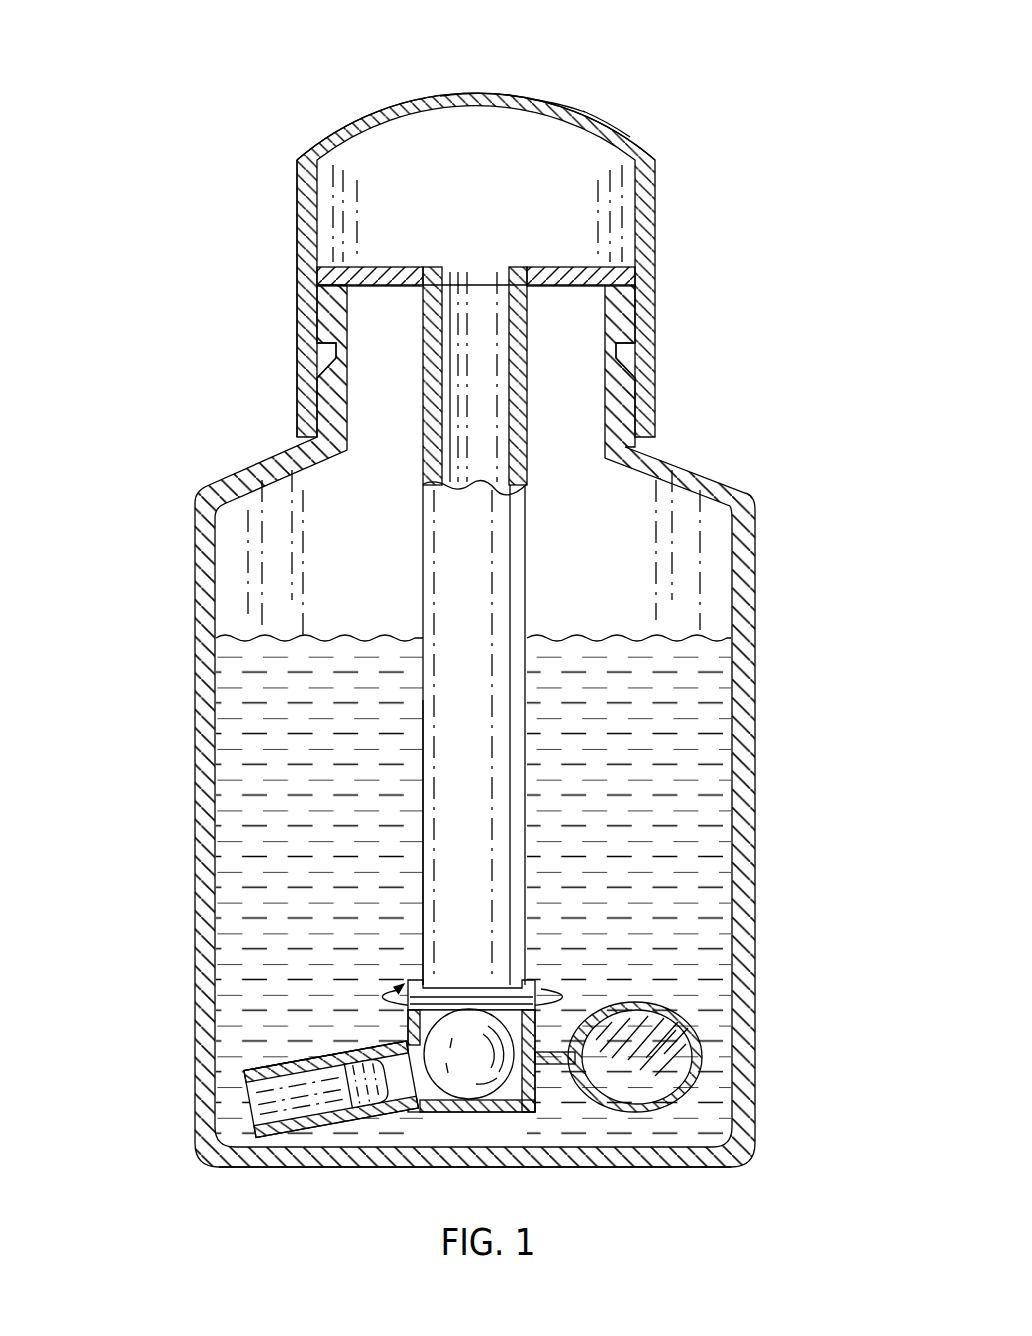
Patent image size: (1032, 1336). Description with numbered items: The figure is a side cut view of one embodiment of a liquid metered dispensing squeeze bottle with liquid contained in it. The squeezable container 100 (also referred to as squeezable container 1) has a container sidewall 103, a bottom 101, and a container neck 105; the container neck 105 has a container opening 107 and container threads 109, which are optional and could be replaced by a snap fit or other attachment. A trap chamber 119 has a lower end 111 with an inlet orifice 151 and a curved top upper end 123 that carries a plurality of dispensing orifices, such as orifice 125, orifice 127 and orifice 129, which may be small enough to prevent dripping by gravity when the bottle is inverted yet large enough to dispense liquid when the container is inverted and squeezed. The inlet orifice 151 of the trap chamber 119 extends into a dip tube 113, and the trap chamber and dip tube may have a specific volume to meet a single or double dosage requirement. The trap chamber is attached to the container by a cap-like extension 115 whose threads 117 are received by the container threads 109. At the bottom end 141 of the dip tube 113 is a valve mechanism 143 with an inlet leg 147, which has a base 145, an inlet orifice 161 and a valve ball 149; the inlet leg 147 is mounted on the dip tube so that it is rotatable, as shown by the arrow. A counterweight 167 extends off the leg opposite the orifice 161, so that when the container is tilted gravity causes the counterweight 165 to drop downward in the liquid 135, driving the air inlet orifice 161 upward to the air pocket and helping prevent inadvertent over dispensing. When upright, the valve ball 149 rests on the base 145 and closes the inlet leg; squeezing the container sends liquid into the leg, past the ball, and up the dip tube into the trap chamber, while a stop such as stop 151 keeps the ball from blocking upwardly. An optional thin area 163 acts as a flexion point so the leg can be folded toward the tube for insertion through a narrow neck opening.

The squeezable container 1 is at (690, 278).
The squeezable container 100 is at (772, 742).
The bottom 101 is at (250, 1168).
The container sidewall 103 is at (757, 1070).
The container neck 105 is at (655, 410).
The container opening 107 is at (538, 300).
The container threads 109 is at (606, 318).
The lower end 111 is at (372, 288).
The dip tube 113 is at (457, 555).
The cap-like extension 115 is at (300, 312).
The threads 117 is at (345, 365).
The trap chamber 119 is at (380, 196).
The upper end 123 is at (372, 118).
The dispensing orifice 125 is at (478, 97).
The dispensing orifice 127 is at (560, 112).
The dispensing orifice 129 is at (600, 128).
The liquid 135 is at (607, 837).
The bottom end 141 is at (466, 921).
The valve mechanism 143 is at (553, 1024).
The base 145 is at (527, 1106).
The inlet leg 147 is at (280, 1060).
The valve ball 149 is at (461, 1085).
The inlet orifice 151 is at (482, 275).
The inlet orifice 161 is at (253, 1118).
The thin area 163 is at (372, 1112).
The counterweight 165 is at (700, 1040).
The counterweight 167 is at (663, 1073).